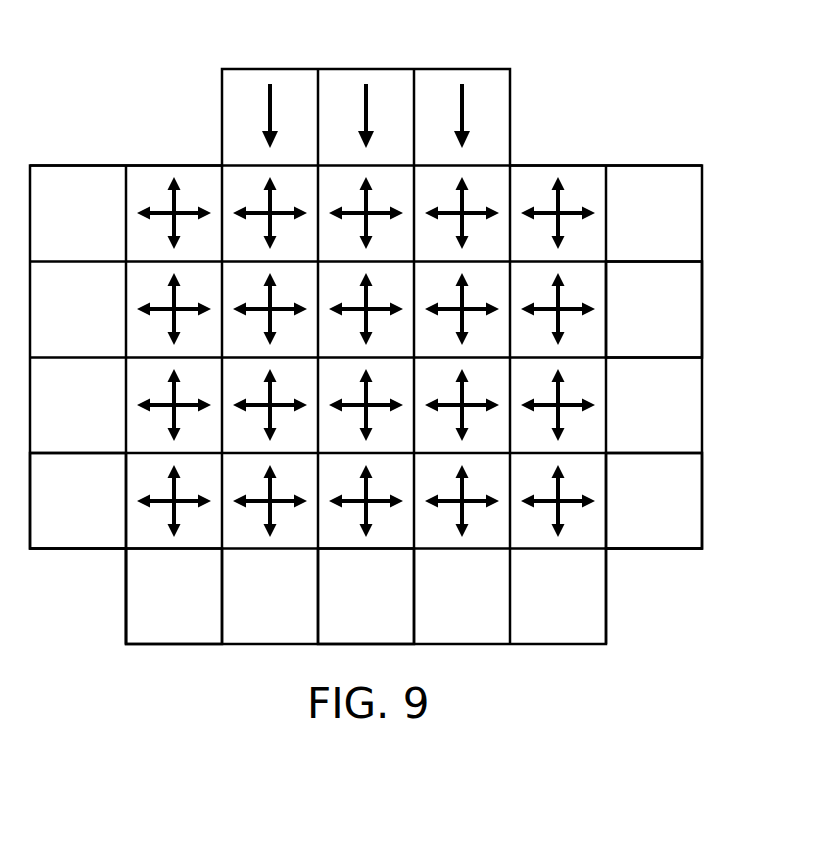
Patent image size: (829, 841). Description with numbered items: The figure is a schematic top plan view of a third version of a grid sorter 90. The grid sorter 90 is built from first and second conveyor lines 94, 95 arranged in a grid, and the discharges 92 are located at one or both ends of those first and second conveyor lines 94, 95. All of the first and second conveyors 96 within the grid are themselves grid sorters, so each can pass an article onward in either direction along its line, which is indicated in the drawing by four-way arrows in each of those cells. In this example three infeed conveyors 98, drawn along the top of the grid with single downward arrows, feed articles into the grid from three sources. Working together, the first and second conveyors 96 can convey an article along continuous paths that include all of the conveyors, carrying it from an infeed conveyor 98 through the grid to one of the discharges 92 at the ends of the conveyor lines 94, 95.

The grid sorter 90 is at (113, 97).
The discharges 92 is at (59, 514).
The first conveyor lines 94 is at (126, 650).
The second conveyor lines 95 is at (712, 453).
The first and second conveyors 96 is at (578, 183).
The infeed conveyors 98 is at (502, 135).